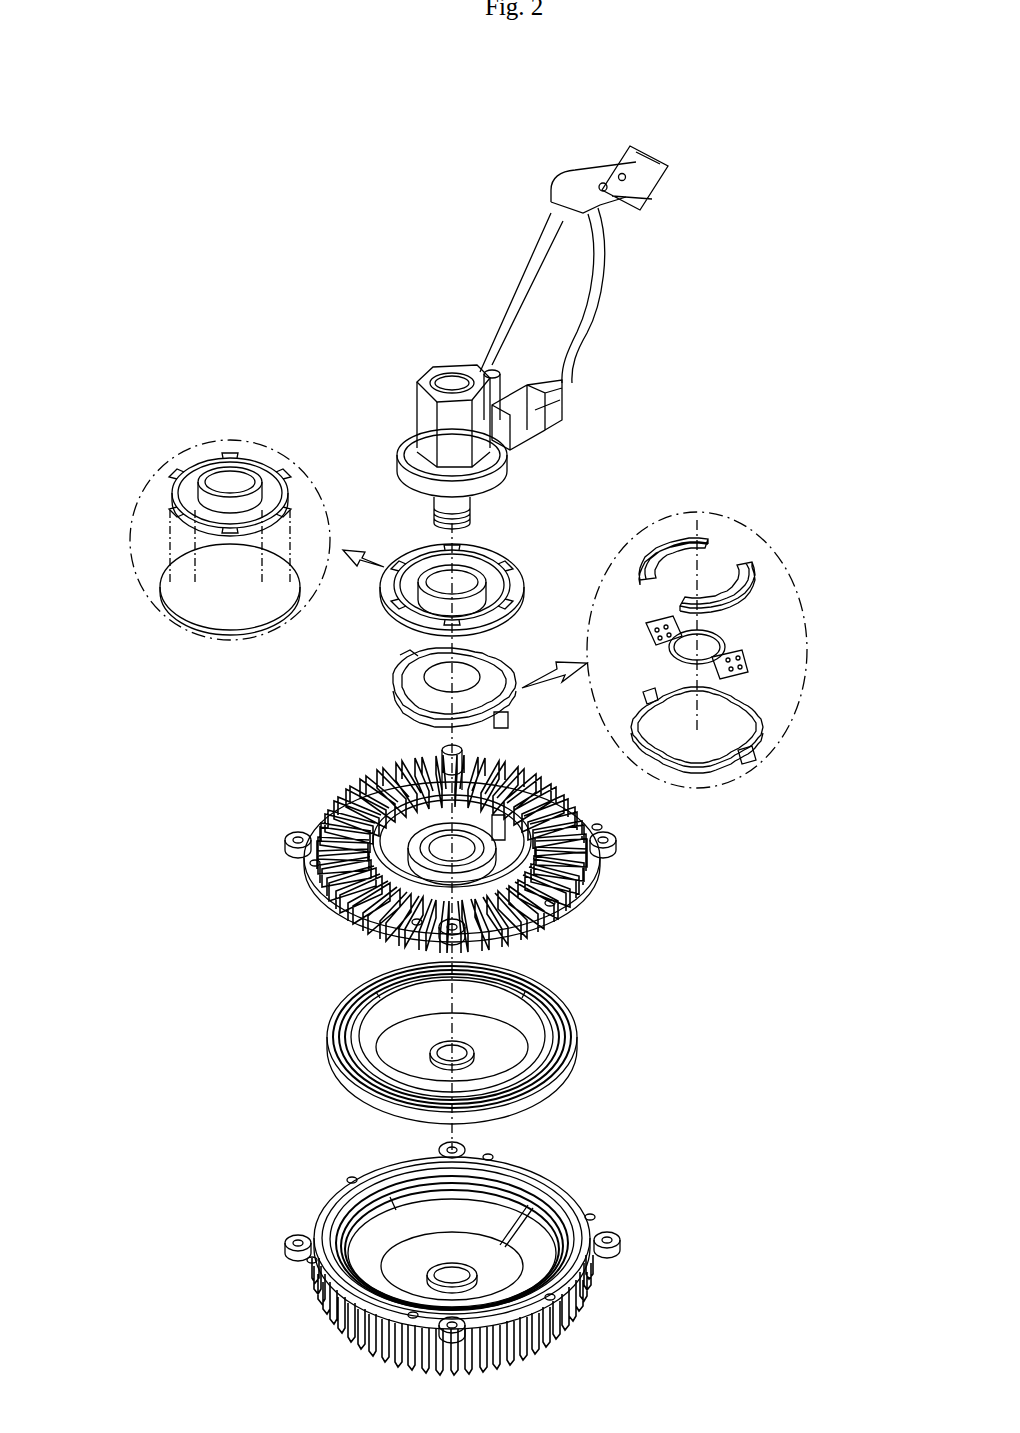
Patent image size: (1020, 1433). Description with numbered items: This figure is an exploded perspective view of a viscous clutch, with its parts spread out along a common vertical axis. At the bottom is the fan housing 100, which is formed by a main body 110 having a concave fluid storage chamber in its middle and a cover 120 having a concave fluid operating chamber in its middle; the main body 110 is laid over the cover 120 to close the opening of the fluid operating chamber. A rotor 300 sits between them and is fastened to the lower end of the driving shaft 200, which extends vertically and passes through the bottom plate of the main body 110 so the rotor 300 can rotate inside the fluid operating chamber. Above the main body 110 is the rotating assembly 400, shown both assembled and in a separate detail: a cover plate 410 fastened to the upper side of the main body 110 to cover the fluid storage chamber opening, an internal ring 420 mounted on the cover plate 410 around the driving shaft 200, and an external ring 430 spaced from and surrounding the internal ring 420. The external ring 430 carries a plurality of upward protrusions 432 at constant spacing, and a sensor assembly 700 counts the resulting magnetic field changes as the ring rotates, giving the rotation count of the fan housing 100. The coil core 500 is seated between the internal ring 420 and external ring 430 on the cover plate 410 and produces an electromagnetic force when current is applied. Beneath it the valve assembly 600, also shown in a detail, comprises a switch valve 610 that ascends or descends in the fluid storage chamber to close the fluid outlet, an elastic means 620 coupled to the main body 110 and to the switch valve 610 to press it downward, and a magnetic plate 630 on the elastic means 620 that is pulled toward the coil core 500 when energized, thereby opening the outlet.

The fan housing 100 is at (414, 1060).
The main body 110 is at (327, 800).
The cover 120 is at (407, 1258).
The driving shaft 200 is at (443, 362).
The rotor 300 is at (578, 1026).
The rotating assembly 400 is at (515, 555).
The cover plate 410 is at (196, 590).
The internal ring 420 is at (213, 455).
The external ring 430 is at (170, 497).
The protrusions 432 is at (178, 476).
The coil core 500 is at (405, 452).
The valve assembly 600 is at (386, 669).
The switch valve 610 is at (743, 720).
The elastic means 620 is at (743, 652).
The magnetic plate 630 is at (707, 538).
The sensor assembly 700 is at (553, 421).